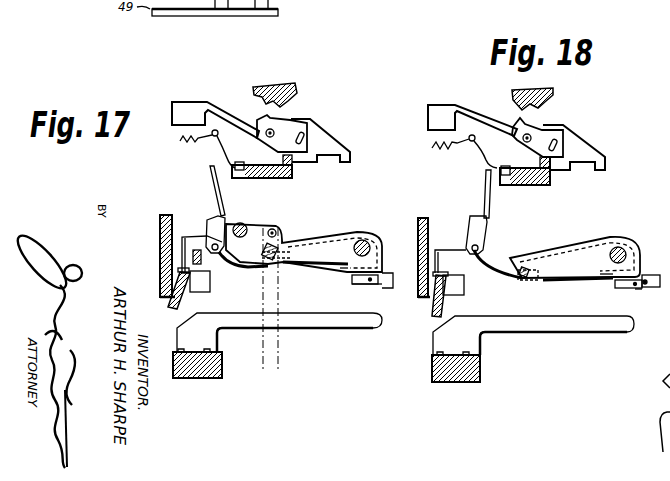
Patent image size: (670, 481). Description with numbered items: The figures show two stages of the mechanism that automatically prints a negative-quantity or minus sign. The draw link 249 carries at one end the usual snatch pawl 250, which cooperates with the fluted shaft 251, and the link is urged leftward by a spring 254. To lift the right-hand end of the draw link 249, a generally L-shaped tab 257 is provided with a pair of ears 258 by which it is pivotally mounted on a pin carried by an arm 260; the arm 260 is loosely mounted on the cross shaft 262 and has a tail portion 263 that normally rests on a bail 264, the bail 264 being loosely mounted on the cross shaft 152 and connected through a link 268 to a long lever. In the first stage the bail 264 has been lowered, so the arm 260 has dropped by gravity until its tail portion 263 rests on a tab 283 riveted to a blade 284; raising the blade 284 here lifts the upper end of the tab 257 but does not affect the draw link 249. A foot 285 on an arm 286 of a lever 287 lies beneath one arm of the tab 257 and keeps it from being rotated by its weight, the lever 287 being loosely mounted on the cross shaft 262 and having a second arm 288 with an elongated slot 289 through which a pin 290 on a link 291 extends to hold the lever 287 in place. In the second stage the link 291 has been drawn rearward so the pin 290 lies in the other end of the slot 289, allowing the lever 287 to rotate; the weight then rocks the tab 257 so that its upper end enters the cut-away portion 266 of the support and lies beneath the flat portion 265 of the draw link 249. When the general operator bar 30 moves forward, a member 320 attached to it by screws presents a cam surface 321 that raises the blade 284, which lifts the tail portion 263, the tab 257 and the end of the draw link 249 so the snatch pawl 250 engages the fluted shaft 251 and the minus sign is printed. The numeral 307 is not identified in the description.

In FIG. 17, the general operator bar 30 is at (188, 378).
In FIG. 18, the general operator bar 30 is at (464, 381).
In FIG. 17, the cross shaft 152 is at (246, 226).
In FIG. 17, the draw link 249 is at (196, 100).
In FIG. 18, the draw link 249 is at (459, 106).
In FIG. 17, the snatch pawl 250 is at (258, 119).
In FIG. 18, the snatch pawl 250 is at (541, 128).
In FIG. 17, the fluted shaft 251 is at (296, 93).
In FIG. 17, the spring 254 is at (189, 144).
In FIG. 17, the tab 257 is at (210, 169).
In FIG. 18, the tab 257 is at (486, 181).
In FIG. 17, the ears 258 is at (210, 223).
In FIG. 18, the ears 258 is at (474, 220).
In FIG. 18, the arm 260 is at (512, 256).
In FIG. 17, the cross shaft 262 is at (366, 242).
In FIG. 17, the tail portion 263 is at (182, 236).
In FIG. 18, the tail portion 263 is at (438, 250).
In FIG. 17, the bail 264 is at (207, 265).
In FIG. 17, the flat portion 265 is at (239, 163).
In FIG. 18, the flat portion 265 is at (512, 168).
In FIG. 17, the cut-away portion 266 is at (240, 178).
In FIG. 18, the cut-away portion 266 is at (503, 185).
In FIG. 17, the link 268 is at (277, 333).
In FIG. 17, the tab 283 is at (201, 291).
In FIG. 17, the blade 284 is at (170, 299).
In FIG. 18, the foot 285 is at (521, 283).
In FIG. 17, the arm 286 is at (298, 266).
In FIG. 18, the arm 286 is at (565, 282).
In FIG. 17, the lever 287 is at (351, 233).
In FIG. 18, the lever 287 is at (612, 239).
In FIG. 17, the second arm 288 is at (349, 277).
In FIG. 18, the second arm 288 is at (608, 288).
In FIG. 17, the elongated slot 289 is at (364, 290).
In FIG. 18, the elongated slot 289 is at (620, 290).
In FIG. 17, the pin 290 is at (353, 286).
In FIG. 18, the pin 290 is at (638, 290).
In FIG. 17, the link 291 is at (387, 290).
In FIG. 18, the link 291 is at (650, 278).
In FIG. 18, the housing 307 is at (465, 289).
In FIG. 17, the member 320 is at (318, 326).
In FIG. 18, the member 320 is at (565, 328).
In FIG. 18, the cam surface 321 is at (450, 300).